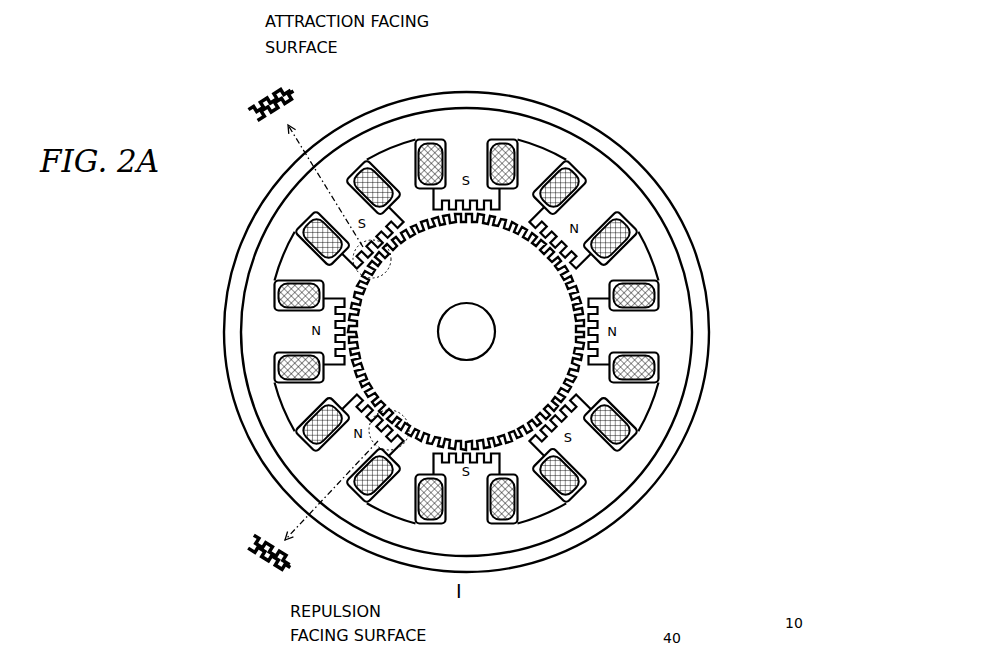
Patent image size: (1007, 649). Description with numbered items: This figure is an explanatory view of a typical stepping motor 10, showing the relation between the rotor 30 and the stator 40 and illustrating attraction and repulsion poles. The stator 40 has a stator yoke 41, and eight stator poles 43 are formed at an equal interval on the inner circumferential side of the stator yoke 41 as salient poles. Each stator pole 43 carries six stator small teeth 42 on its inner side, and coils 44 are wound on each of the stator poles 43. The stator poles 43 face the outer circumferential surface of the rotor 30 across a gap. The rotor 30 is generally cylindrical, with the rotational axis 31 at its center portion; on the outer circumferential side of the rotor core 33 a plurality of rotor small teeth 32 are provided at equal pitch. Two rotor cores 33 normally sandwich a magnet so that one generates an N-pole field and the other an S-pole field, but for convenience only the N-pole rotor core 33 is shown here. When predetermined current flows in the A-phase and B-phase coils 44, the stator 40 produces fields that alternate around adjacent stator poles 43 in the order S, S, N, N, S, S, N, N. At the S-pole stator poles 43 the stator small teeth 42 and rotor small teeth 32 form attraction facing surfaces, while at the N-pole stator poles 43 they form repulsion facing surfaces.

The motor 10 is at (496, 317).
The rotor 30 is at (548, 339).
The rotational axis 31 is at (479, 313).
The rotor small teeth 32 is at (332, 320).
The rotor core 33 is at (478, 412).
The stator 40 is at (494, 332).
The stator yoke 41 is at (466, 294).
The stator small teeth 42 is at (259, 334).
The stator poles 43 is at (475, 284).
The coils 44 is at (467, 287).